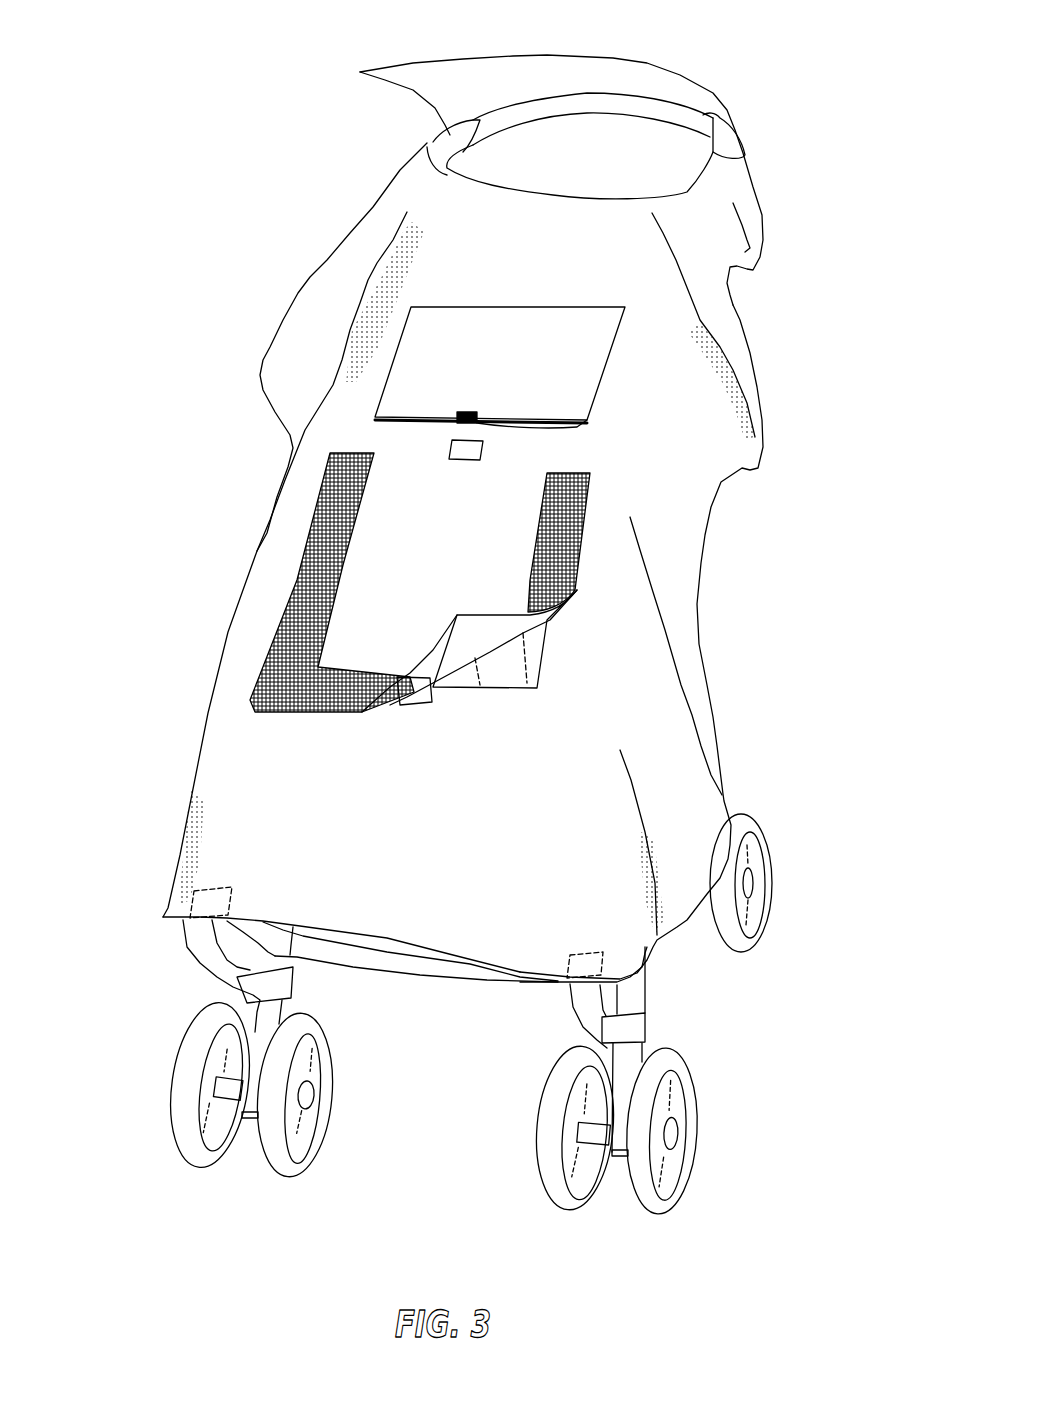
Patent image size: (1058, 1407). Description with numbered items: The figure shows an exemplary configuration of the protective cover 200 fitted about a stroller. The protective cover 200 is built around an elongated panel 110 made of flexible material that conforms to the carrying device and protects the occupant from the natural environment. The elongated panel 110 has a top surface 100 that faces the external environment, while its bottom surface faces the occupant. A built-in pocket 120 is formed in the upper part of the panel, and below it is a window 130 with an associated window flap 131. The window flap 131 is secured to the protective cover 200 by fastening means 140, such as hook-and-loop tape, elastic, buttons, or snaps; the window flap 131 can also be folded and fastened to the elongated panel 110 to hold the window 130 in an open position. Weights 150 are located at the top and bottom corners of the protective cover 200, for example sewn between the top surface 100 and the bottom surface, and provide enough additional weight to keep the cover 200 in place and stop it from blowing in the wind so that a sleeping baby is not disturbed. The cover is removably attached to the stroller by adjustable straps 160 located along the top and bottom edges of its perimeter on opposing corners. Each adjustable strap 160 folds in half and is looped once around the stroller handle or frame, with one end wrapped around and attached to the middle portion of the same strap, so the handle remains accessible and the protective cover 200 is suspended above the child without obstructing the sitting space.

The protective cover 200 is at (712, 38).
The top surface 100 is at (287, 498).
The elongated panel 110 is at (738, 549).
The built-in pocket 120 is at (577, 357).
The window 130 is at (537, 662).
The window flap 131 is at (206, 557).
The fastening means 140 is at (452, 448).
The weights 150 is at (176, 887).
The adjustable straps 160 is at (360, 73).